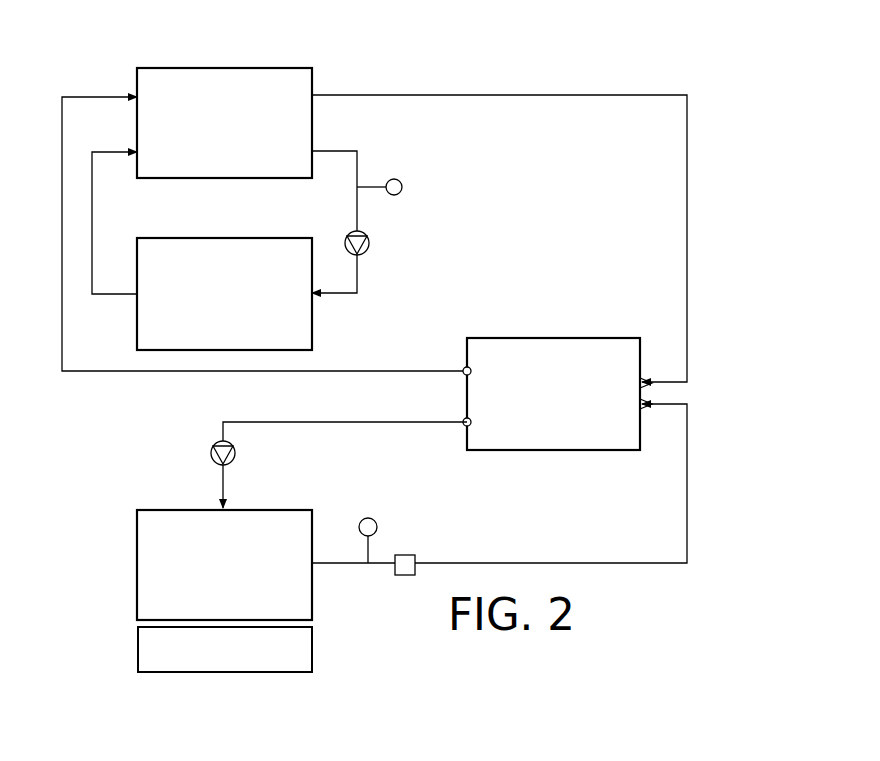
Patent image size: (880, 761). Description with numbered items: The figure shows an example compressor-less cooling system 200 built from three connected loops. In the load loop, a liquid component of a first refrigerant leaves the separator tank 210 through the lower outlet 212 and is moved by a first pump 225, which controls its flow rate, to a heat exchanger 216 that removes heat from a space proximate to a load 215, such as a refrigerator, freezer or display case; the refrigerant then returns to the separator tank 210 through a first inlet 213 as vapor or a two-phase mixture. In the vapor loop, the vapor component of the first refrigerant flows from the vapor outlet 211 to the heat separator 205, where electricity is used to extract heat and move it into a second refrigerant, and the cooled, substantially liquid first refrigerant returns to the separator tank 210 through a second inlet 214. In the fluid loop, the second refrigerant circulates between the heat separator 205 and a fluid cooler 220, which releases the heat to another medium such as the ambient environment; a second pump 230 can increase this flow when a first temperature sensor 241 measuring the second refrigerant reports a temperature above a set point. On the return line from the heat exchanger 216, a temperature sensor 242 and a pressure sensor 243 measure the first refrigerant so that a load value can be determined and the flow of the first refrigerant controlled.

The cooling system 200 is at (600, 58).
The heat separator 205 is at (313, 118).
The separator tank 210 is at (545, 451).
The vapor outlet 211 is at (464, 368).
The separator tank outlet 212 is at (464, 426).
The first inlet 213 is at (664, 410).
The second inlet 214 is at (664, 378).
The load 215 is at (137, 648).
The heat exchanger 216 is at (136, 563).
The fluid cooler 220 is at (313, 320).
The first pump 225 is at (211, 453).
The second pump 230 is at (370, 242).
The first temperature sensor 241 is at (403, 187).
The temperature sensor 242 is at (366, 517).
The pressure sensor 243 is at (406, 554).